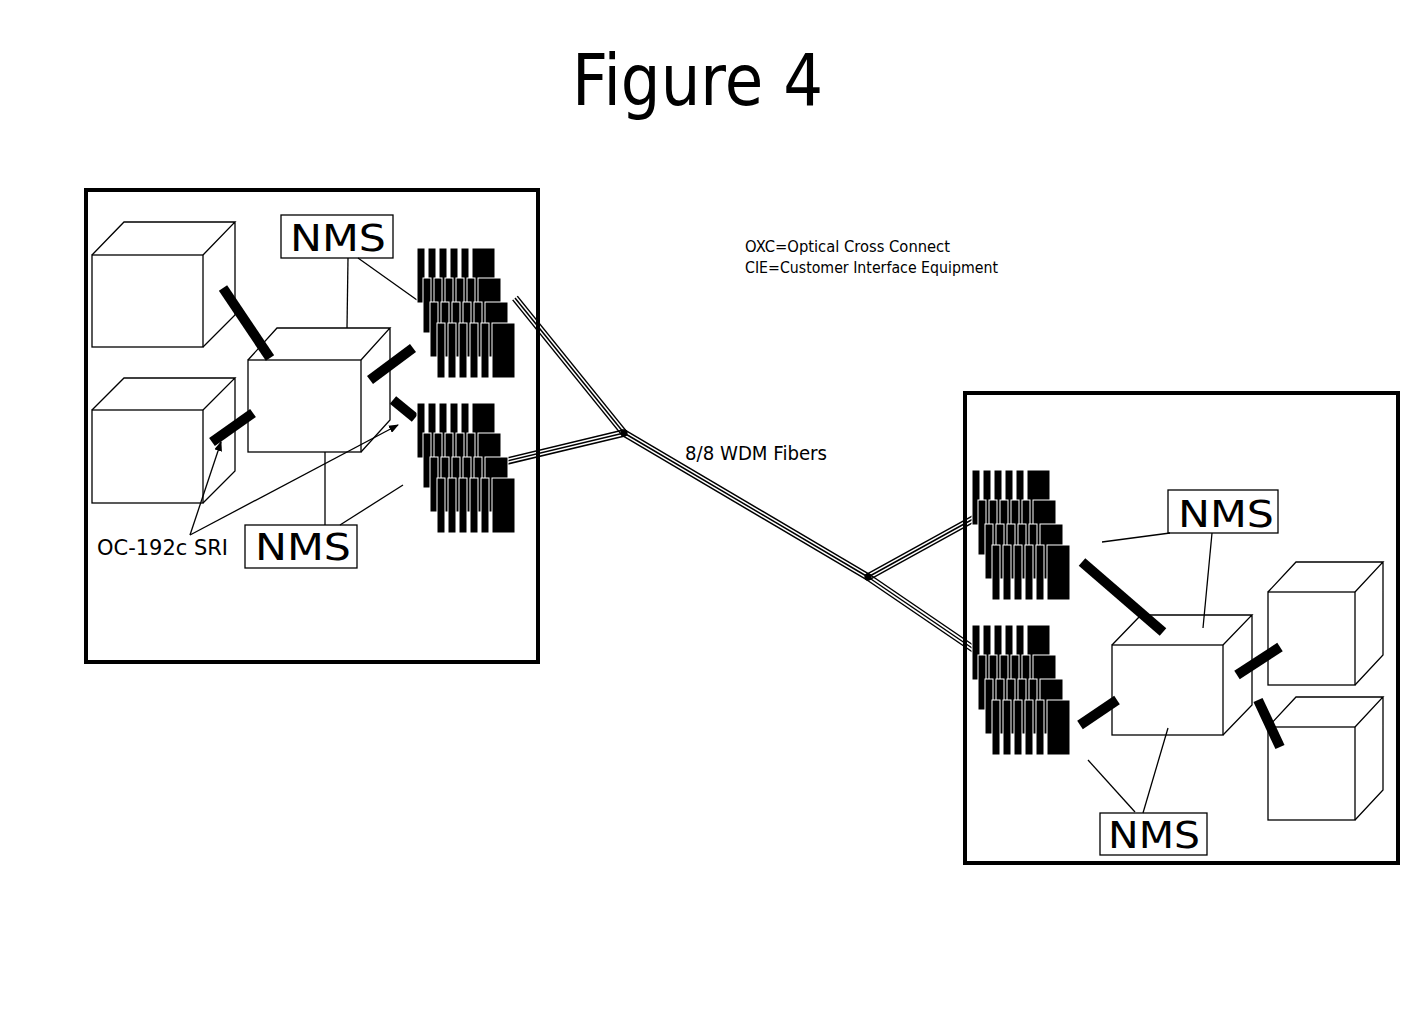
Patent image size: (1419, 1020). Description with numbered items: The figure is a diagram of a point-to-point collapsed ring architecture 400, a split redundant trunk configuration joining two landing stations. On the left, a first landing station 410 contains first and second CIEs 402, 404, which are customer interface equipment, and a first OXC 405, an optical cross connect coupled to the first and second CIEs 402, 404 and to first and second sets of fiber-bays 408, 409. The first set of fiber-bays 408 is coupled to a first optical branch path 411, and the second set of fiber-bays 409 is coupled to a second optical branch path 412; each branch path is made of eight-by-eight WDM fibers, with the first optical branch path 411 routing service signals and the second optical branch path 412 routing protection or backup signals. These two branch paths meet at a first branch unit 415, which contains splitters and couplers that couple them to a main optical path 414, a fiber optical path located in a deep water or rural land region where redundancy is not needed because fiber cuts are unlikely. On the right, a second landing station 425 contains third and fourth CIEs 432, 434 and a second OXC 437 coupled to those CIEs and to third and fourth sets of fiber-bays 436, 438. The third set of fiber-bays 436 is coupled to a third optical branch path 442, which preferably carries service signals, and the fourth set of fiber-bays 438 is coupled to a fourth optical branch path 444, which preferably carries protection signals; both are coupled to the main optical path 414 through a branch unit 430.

The point-to-point collapsed ring architecture 400 is at (649, 803).
The first CIE 402 is at (163, 284).
The second CIE 404 is at (163, 440).
The first OXC 405 is at (319, 390).
The first set of fiber-bays 408 is at (460, 252).
The second set of fiber-bays 409 is at (436, 512).
The first landing station 410 is at (365, 663).
The first optical branch path 411 is at (587, 373).
The second optical branch path 412 is at (560, 445).
The main optical path 414 is at (742, 519).
The first branch unit 415 is at (618, 441).
The second landing station 425 is at (1188, 393).
The branch unit 430 is at (850, 580).
The third CIE 432 is at (1325, 623).
The fourth CIE 434 is at (1325, 758).
The third set of fiber-bays 436 is at (1058, 508).
The second OXC 437 is at (1182, 675).
The fourth set of fiber-bays 438 is at (1054, 660).
The third optical branch path 442 is at (920, 541).
The fourth optical branch path 444 is at (920, 630).